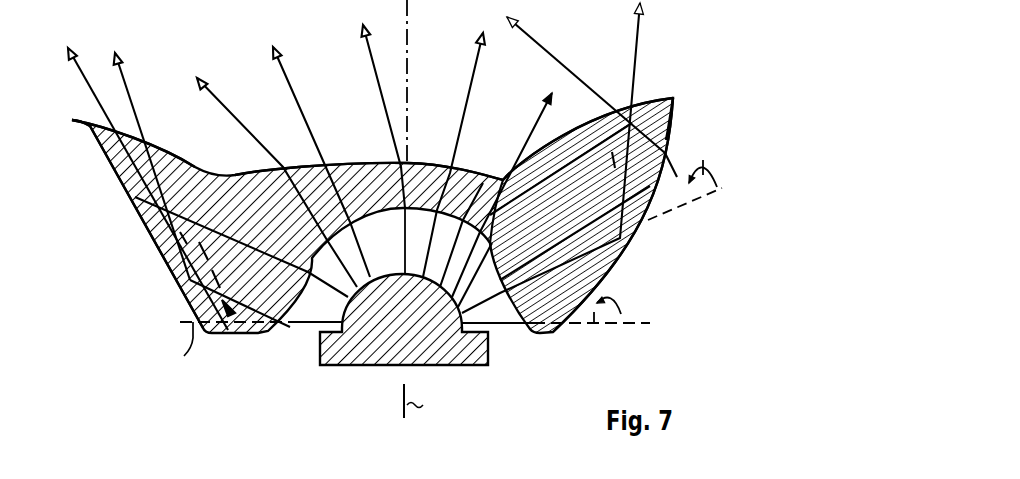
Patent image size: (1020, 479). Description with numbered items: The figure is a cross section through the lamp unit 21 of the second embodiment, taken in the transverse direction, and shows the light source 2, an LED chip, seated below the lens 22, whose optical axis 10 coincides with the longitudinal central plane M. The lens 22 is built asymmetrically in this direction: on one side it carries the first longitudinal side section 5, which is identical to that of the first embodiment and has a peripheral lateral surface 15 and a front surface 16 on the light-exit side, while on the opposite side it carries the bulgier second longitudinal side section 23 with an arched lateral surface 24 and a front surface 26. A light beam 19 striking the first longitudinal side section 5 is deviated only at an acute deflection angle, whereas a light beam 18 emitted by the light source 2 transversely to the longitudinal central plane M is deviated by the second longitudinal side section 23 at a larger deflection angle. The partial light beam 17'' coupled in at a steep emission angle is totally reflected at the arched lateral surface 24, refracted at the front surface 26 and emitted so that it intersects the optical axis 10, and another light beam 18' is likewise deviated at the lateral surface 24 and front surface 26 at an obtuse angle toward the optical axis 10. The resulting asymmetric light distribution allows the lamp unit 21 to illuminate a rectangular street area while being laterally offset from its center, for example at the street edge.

The light source 2 is at (472, 360).
The first longitudinal side section 5 is at (133, 196).
The optical axis 10 is at (409, 14).
The lateral surface 15 is at (154, 238).
The front surface 16 is at (176, 156).
The partial light beam 17'' is at (637, 215).
The light beam 18 is at (576, 196).
The light beam 18' is at (567, 218).
The light beam 19 is at (298, 325).
The lamp unit 21 is at (118, 338).
The lens 22 is at (305, 167).
The second longitudinal side section 23 is at (660, 100).
The arched lateral surface 24 is at (668, 103).
The front surface 26 is at (573, 129).
The longitudinal central plane M is at (430, 405).